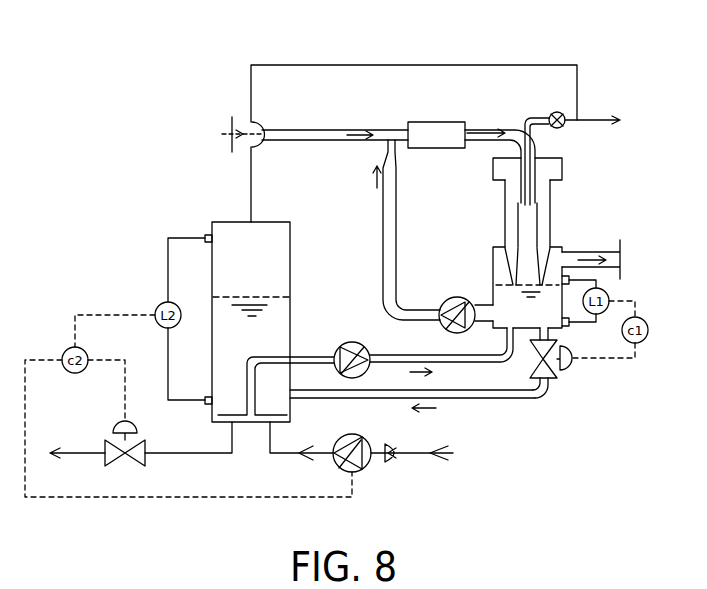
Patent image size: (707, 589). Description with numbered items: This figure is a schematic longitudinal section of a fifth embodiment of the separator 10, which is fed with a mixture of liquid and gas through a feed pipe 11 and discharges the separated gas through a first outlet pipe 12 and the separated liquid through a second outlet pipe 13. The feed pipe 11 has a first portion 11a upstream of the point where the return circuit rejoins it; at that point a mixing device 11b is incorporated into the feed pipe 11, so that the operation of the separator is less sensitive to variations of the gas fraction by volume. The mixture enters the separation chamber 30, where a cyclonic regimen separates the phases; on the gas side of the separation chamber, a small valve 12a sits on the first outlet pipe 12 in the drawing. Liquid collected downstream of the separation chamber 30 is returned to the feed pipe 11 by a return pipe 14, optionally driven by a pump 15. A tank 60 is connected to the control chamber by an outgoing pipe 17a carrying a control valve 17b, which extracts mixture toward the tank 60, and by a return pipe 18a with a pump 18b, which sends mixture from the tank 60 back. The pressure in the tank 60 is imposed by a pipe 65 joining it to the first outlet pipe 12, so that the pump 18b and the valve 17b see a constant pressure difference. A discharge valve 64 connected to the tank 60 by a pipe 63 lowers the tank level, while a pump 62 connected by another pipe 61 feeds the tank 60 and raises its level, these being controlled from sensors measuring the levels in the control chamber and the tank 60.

The separator 10 is at (622, 162).
The feed pipe 11 is at (338, 142).
The first portion 11a is at (298, 127).
The mixing device 11b is at (428, 121).
The first outlet pipe 12 is at (584, 118).
The valve 12a is at (545, 111).
The second outlet pipe 13 is at (585, 250).
The return pipe 14 is at (399, 217).
The pump 15 is at (451, 298).
The outgoing pipe 17a is at (491, 402).
The control valve 17b is at (549, 381).
The return pipe 18a is at (385, 352).
The pump 18b is at (335, 348).
The separation chamber 30 is at (536, 214).
The tank 60 is at (276, 270).
The pipe 61 is at (421, 455).
The pump 62 is at (338, 463).
The pipe 63 is at (180, 455).
The valve 64 is at (104, 461).
The pipe 65 is at (433, 64).